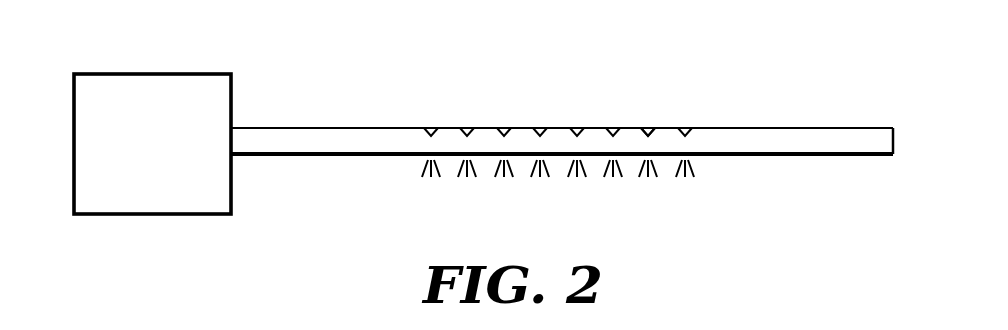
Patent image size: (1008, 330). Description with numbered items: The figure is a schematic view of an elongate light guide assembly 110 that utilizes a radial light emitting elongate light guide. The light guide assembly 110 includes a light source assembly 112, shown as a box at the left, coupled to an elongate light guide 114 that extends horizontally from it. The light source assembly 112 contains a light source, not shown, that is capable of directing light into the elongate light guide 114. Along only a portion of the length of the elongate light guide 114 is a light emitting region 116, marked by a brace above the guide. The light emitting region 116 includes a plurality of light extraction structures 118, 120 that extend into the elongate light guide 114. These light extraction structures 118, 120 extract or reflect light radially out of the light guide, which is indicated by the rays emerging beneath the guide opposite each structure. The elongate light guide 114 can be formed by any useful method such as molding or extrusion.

The elongate light guide assembly 110 is at (483, 108).
The light source assembly 112 is at (192, 92).
The elongate light guide 114 is at (292, 142).
The light emitting region 116 is at (690, 107).
The light extraction structure 118 is at (645, 130).
The light extraction structure 120 is at (687, 127).